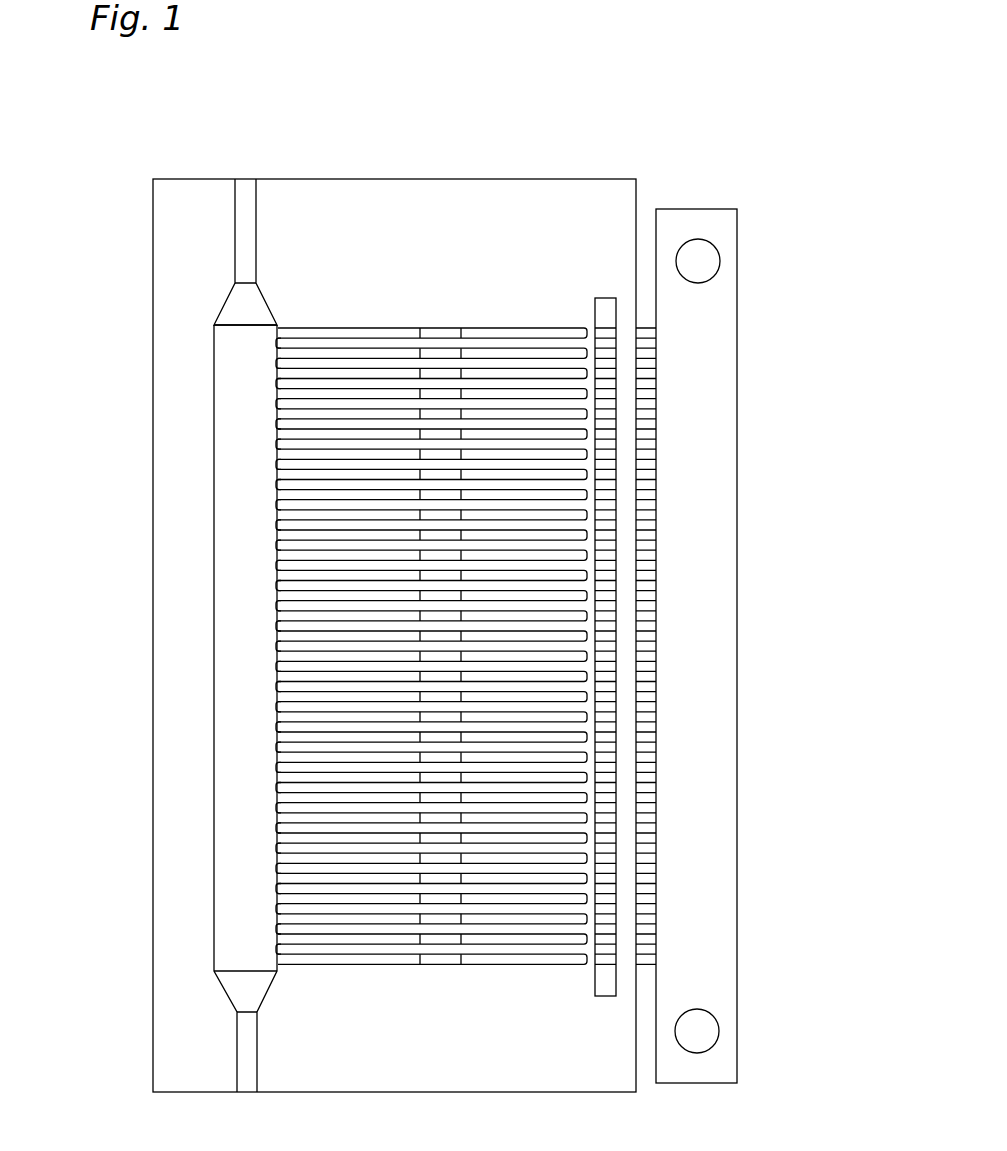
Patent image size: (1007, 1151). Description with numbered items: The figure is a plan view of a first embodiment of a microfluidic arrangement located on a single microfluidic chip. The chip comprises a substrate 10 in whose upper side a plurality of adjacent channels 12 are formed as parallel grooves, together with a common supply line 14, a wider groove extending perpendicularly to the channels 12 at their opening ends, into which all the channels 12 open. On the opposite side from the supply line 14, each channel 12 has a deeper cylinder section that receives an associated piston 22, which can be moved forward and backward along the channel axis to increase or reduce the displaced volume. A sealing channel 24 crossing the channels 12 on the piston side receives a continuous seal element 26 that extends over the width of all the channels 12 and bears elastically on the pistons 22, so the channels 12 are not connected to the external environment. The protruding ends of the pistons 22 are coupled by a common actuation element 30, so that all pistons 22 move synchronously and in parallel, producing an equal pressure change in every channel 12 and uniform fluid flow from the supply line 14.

The substrate 10 is at (417, 198).
The channels 12 is at (292, 457).
The common supply line 14 is at (233, 377).
The piston 22 is at (535, 456).
The sealing channel 24 is at (605, 318).
The seal element 26 is at (646, 646).
The common actuation element 30 is at (708, 550).